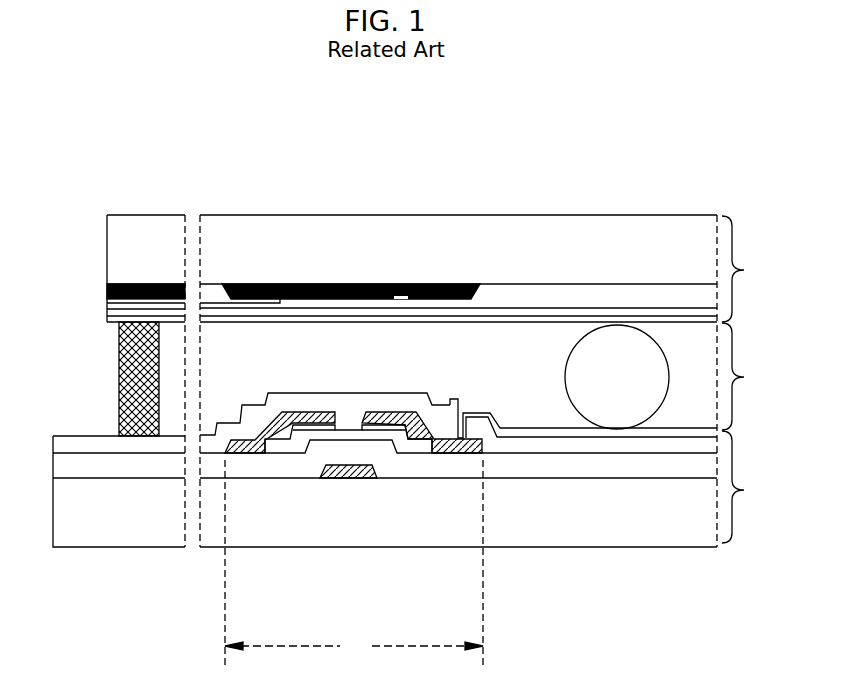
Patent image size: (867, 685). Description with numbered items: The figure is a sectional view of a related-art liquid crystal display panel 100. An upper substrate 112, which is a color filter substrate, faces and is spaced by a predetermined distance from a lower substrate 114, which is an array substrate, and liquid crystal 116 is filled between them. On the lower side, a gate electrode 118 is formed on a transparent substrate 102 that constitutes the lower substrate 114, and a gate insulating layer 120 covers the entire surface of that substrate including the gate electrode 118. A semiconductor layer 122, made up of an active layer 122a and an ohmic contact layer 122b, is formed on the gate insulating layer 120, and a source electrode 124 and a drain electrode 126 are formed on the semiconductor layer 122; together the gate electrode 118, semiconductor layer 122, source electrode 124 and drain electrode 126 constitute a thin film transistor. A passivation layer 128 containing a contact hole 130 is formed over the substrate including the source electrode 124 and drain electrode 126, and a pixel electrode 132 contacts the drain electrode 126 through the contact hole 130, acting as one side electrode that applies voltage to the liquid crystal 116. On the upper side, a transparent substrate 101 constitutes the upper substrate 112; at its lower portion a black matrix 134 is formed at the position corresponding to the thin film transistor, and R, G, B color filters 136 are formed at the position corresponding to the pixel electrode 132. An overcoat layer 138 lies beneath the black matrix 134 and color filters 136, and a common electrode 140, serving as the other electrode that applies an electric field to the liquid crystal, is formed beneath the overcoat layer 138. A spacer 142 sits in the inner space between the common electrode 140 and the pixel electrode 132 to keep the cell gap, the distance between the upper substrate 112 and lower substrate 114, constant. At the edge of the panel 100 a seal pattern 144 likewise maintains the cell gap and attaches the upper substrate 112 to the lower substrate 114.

The liquid crystal display panel 100 is at (516, 186).
The transparent substrate 101 is at (449, 235).
The transparent substrate 102 is at (692, 548).
The upper substrate 112 is at (448, 254).
The lower substrate 114 is at (421, 495).
The liquid crystal 116 is at (410, 459).
The gate electrode 118 is at (355, 470).
The gate insulating layer 120 is at (427, 465).
The semiconductor layer 122 is at (329, 531).
The active layer 122a is at (290, 437).
The ohmic contact layer 122b is at (265, 440).
The source electrode 124 is at (302, 412).
The drain electrode 126 is at (395, 412).
The passivation layer 128 is at (347, 393).
The contact hole 130 is at (468, 403).
The pixel electrode 132 is at (635, 438).
The black matrix 134 is at (319, 285).
The color filters 136 is at (624, 296).
The overcoat layer 138 is at (399, 300).
The common electrode 140 is at (252, 323).
The spacer 142 is at (598, 404).
The seal pattern 144 is at (119, 367).